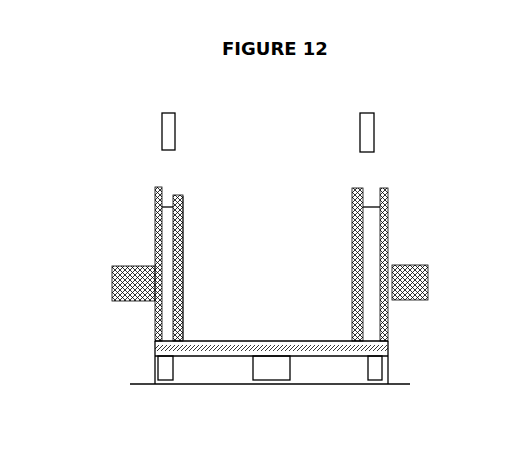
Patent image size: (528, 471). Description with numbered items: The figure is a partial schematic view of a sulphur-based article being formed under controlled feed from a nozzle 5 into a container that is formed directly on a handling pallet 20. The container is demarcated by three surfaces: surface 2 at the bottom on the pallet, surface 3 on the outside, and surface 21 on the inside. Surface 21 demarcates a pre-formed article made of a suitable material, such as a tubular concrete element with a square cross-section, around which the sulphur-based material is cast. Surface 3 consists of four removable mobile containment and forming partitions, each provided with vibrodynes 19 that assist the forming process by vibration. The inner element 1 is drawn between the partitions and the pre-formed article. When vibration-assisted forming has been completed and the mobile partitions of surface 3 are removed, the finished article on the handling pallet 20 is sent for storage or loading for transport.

The inner wall 1 is at (184, 213).
The surface 2 is at (223, 342).
The surface 3 is at (155, 192).
The nozzle 5 is at (171, 142).
The vibrodynes 19 is at (123, 266).
The handling pallet 20 is at (155, 360).
The surface 21 is at (184, 273).